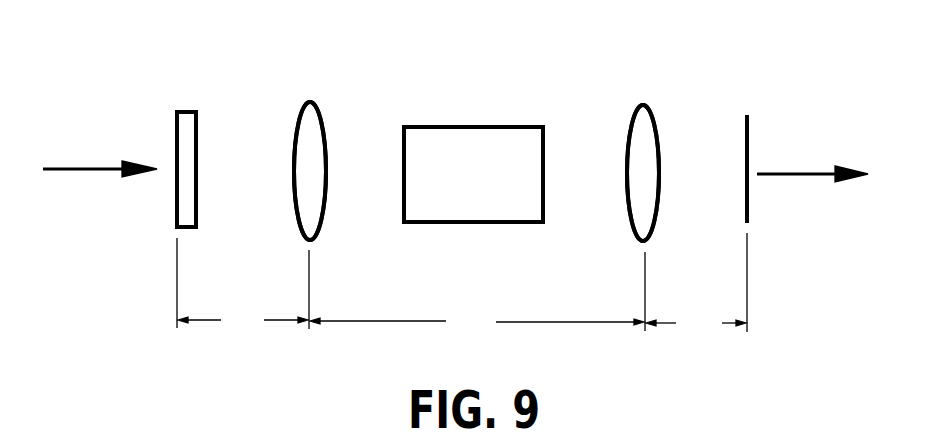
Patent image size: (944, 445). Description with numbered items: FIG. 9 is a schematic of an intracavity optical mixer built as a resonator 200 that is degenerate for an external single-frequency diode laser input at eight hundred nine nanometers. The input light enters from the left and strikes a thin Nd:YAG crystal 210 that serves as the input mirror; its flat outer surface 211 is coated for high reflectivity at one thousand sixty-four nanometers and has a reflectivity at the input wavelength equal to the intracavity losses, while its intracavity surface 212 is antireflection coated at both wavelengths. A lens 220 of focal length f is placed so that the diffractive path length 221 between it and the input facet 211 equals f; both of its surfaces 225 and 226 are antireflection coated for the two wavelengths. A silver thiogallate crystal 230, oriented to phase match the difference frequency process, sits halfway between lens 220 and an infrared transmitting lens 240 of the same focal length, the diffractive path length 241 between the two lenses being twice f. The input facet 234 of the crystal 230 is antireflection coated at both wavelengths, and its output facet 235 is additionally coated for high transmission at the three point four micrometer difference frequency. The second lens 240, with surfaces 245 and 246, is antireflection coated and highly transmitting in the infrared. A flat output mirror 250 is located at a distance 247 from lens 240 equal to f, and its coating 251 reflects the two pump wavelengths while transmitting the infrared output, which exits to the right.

The resonator 200 is at (455, 223).
The Nd:YAG crystal 210 is at (192, 89).
The flat outer surface of the crystal 211 is at (157, 220).
The intracavity surface of the Nd:YAG crystal 212 is at (210, 113).
The lens 220 is at (323, 224).
The diffractive path length 221 is at (243, 286).
The surface of lens 225 is at (284, 97).
The surface of lens 226 is at (331, 99).
The crystal of silver thiogallate 230 is at (470, 225).
The input facet 234 is at (388, 121).
The output facet 235 is at (556, 127).
The infrared transmitting lens 240 is at (635, 245).
The diffractive path length 241 is at (477, 294).
The surface of lens 245 is at (616, 117).
The surface of lens 246 is at (672, 119).
The distance 247 is at (696, 286).
The output mirror 250 is at (745, 226).
The coating 251 is at (760, 237).